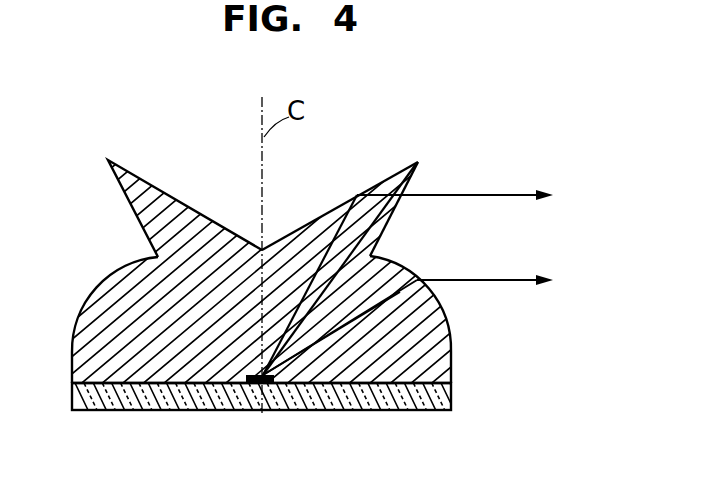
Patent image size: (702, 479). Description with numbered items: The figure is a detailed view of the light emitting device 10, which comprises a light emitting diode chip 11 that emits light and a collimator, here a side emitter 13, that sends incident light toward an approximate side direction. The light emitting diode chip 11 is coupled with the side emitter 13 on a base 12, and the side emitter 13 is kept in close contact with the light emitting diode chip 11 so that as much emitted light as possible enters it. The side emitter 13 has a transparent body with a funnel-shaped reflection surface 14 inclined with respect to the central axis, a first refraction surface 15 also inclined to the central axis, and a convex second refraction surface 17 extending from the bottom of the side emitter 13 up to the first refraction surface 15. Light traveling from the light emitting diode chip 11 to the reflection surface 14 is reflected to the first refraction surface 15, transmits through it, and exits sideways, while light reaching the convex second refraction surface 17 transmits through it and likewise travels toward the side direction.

The light emitting device 10 is at (558, 108).
The light emitting diode chip 11 is at (261, 410).
The base 12 is at (451, 397).
The side emitter 13 is at (205, 252).
The reflection surface 14 is at (325, 215).
The first refraction surface 15 is at (390, 218).
The second refraction surface 17 is at (451, 338).